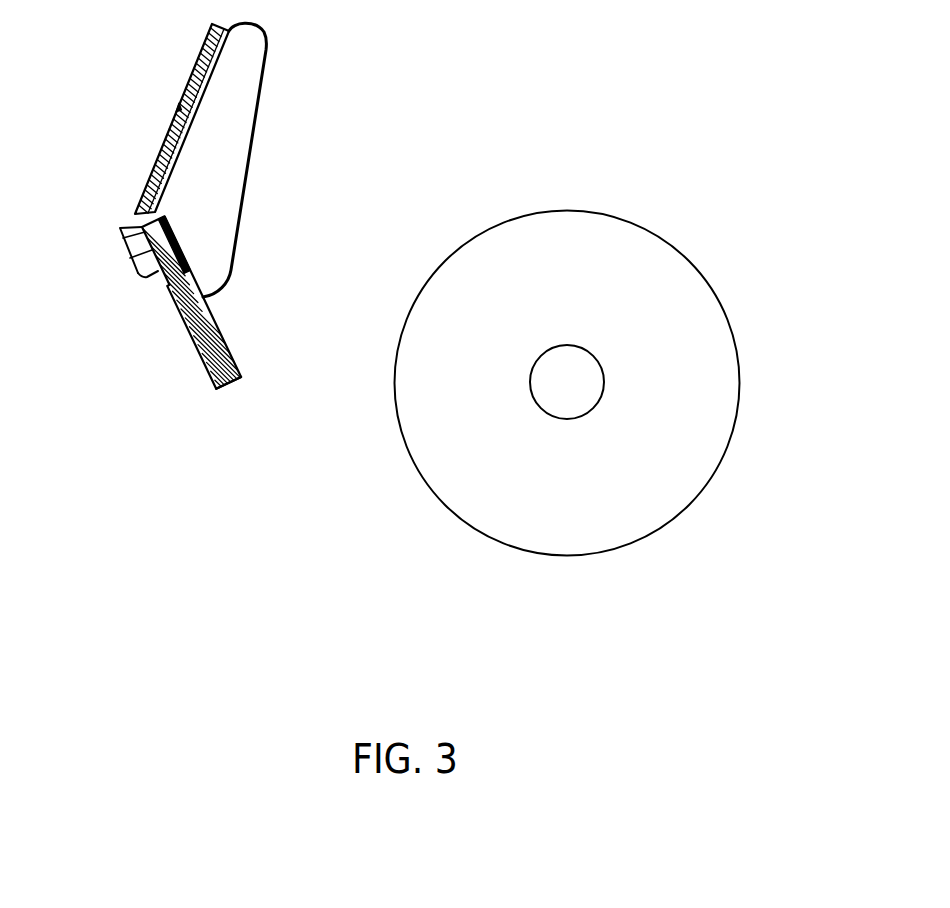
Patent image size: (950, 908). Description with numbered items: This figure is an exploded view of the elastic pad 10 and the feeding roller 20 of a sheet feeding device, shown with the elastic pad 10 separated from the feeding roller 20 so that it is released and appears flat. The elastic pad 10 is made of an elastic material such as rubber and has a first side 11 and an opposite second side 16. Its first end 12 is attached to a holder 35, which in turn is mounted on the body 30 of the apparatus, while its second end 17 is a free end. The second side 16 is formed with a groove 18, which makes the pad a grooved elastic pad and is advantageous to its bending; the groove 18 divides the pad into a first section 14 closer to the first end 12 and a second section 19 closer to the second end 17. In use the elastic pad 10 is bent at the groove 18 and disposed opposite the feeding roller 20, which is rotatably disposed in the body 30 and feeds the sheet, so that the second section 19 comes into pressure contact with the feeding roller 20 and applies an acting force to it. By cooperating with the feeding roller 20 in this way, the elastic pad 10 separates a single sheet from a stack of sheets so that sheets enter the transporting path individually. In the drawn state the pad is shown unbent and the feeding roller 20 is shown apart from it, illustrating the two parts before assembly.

The elastic pad 10 is at (145, 333).
The first side 11 is at (196, 286).
The first end 12 is at (120, 228).
The first section 14 is at (140, 248).
The second side 16 is at (181, 310).
The second end 17 is at (232, 384).
The groove 18 is at (137, 277).
The second section 19 is at (197, 342).
The feeding roller 20 is at (738, 398).
The body 30 is at (165, 147).
The holder 35 is at (170, 243).